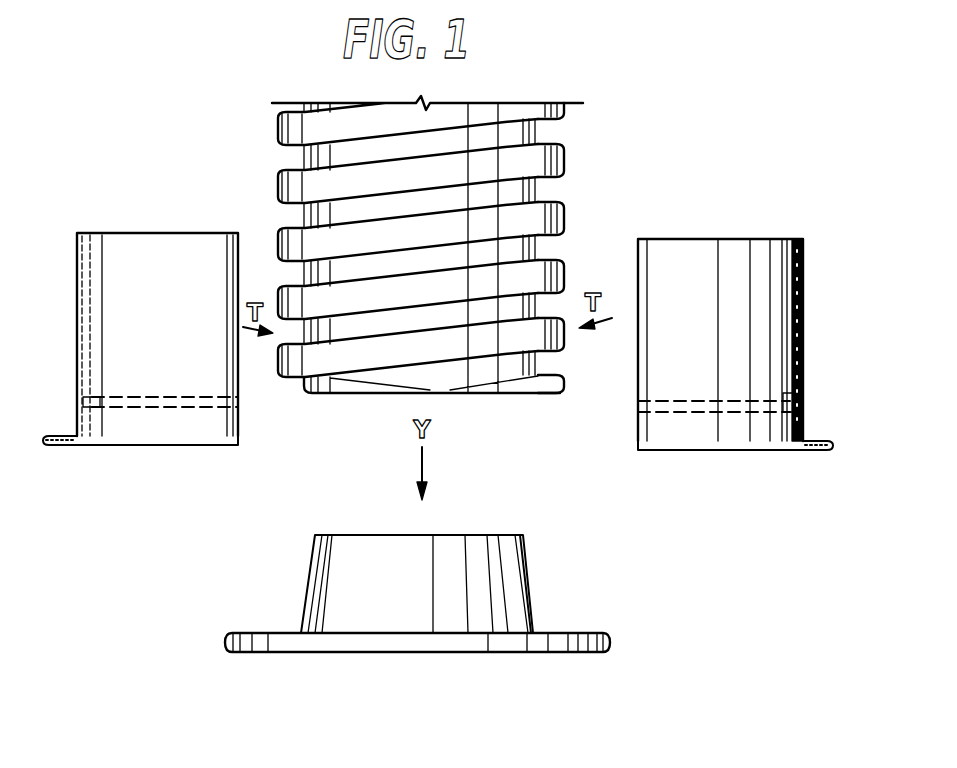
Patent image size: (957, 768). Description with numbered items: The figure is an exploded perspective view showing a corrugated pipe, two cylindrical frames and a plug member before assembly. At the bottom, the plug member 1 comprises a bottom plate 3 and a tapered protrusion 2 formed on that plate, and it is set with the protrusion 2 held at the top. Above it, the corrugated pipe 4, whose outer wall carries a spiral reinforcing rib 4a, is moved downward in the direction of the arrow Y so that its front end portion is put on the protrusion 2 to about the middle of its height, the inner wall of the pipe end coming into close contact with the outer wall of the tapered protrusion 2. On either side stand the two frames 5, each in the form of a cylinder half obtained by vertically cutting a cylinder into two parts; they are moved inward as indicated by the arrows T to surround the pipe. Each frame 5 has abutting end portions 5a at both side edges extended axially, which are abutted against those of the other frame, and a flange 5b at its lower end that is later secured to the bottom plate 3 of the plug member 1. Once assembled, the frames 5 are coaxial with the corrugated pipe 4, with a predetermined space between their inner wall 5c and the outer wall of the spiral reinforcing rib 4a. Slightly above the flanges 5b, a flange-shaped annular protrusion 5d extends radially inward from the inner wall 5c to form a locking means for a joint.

The plug member 1 is at (429, 613).
The protrusion 2 is at (505, 563).
The bottom plate 3 is at (573, 645).
The corrugated pipe 4 is at (460, 241).
The spiral reinforcing rib 4a is at (546, 218).
The frame 5 is at (454, 340).
The abutting end portion 5a is at (233, 272).
The flange 5b is at (68, 447).
The inner wall 5c is at (787, 275).
The annular protrusion 5d is at (800, 388).